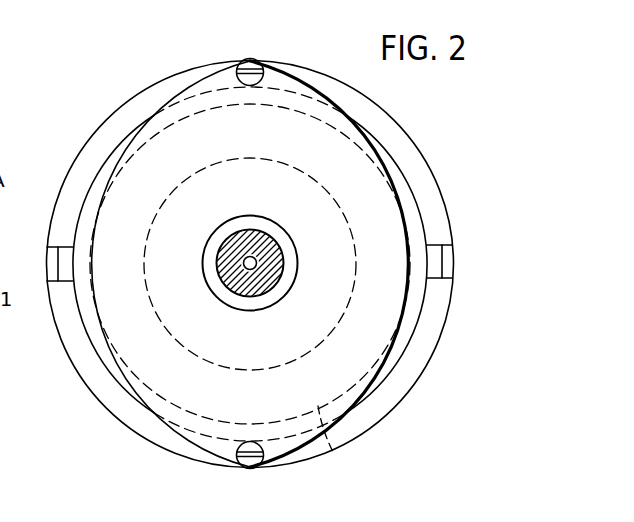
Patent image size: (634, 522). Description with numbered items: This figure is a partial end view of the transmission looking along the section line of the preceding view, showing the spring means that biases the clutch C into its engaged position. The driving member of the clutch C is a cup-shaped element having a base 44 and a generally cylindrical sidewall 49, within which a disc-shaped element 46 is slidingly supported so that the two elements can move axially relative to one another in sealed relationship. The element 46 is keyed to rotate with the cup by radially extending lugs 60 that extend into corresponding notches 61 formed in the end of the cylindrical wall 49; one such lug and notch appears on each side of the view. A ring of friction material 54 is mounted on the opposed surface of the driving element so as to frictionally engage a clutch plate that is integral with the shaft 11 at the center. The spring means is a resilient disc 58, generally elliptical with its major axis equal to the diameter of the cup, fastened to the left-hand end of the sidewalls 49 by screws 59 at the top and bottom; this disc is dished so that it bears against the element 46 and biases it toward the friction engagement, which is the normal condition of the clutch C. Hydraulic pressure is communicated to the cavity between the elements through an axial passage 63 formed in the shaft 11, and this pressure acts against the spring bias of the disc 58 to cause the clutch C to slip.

The base 44 is at (401, 398).
The cylindrical sidewall 49 is at (432, 333).
The resilient disc 58 is at (352, 147).
The disc-shaped element 46 is at (100, 345).
The friction material ring 54 is at (333, 452).
The screws 59 is at (256, 61).
The radially extending lugs 60 is at (63, 277).
The notch 61 is at (50, 262).
The shaft 11 is at (266, 285).
The axial passage 63 is at (246, 267).
The clutch C is at (113, 108).